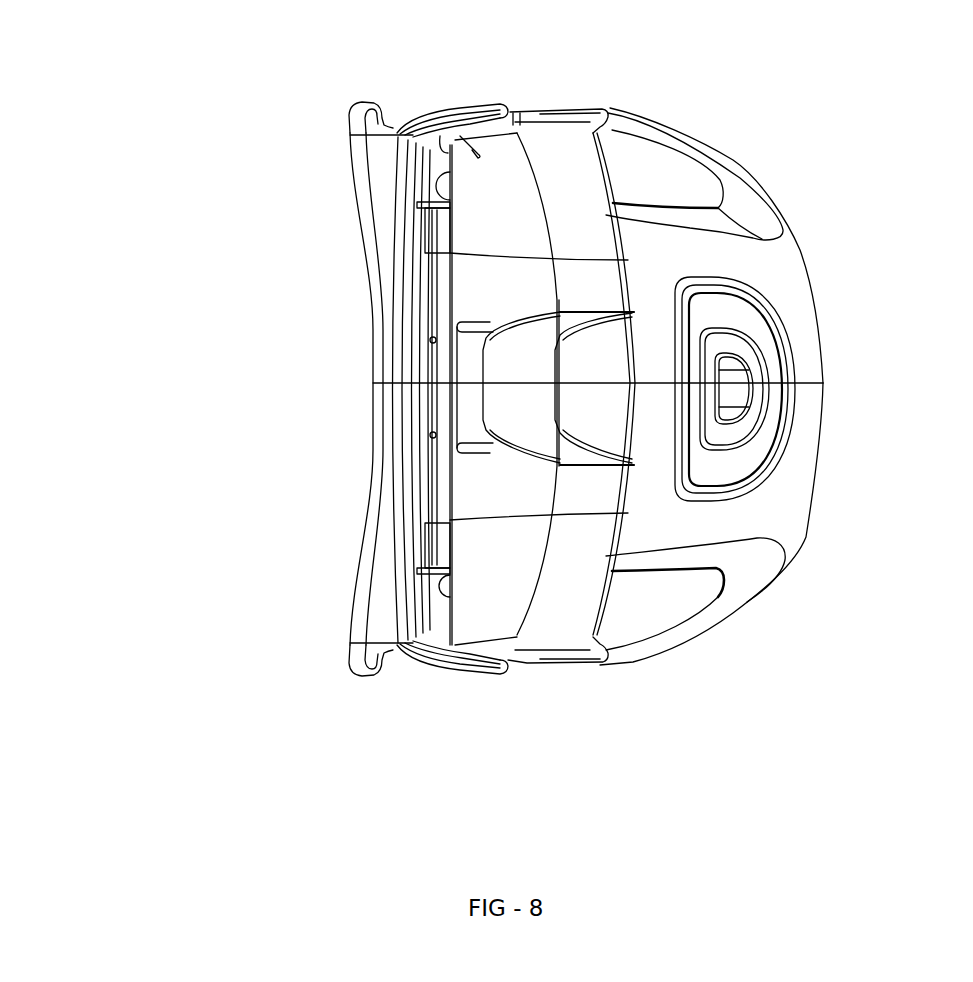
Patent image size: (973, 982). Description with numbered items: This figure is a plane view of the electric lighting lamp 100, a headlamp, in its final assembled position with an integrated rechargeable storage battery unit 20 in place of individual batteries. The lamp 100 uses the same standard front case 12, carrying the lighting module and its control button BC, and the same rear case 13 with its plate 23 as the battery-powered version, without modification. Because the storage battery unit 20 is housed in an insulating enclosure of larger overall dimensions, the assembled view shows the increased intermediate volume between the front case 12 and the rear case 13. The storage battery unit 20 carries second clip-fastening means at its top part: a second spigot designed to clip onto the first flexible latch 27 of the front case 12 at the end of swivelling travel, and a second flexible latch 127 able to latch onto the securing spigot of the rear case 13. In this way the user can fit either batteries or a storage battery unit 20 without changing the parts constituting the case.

The electric lighting lamp 100 is at (752, 135).
The front case 12 is at (770, 520).
The control button BC is at (745, 383).
The first flexible latch 27 is at (597, 360).
The rechargeable storage battery unit 20 is at (579, 88).
The second flexible latch 127 is at (520, 381).
The plate 23 is at (370, 280).
The rear case 13 is at (478, 556).